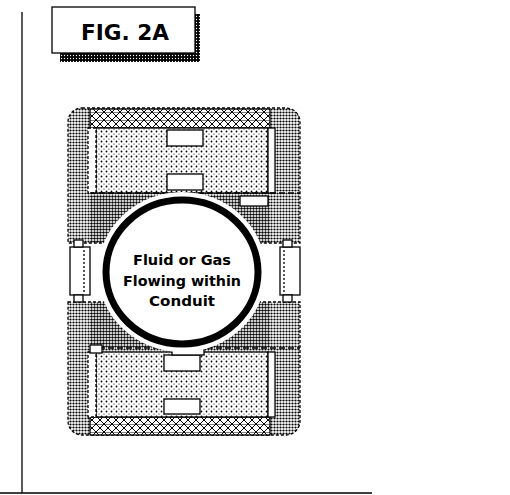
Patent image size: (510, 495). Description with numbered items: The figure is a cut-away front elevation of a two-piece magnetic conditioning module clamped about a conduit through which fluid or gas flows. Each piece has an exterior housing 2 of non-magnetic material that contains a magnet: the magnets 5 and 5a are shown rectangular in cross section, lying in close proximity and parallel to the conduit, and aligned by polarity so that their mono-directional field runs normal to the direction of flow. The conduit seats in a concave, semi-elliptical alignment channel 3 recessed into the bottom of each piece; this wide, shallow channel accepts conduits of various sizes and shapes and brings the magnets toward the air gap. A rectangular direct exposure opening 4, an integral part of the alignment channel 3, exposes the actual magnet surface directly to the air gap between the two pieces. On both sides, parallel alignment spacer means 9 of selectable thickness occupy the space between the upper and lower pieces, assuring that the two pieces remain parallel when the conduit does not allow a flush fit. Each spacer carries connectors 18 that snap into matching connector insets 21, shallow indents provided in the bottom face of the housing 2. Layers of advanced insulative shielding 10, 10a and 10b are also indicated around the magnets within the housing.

The housing 2 is at (300, 163).
The alignment channel 3 is at (258, 218).
The direct exposure opening 4 is at (256, 193).
The magnet 5 is at (275, 393).
The magnet 5a is at (256, 152).
The parallel alignment spacer means 9 is at (300, 265).
The insulative shielding 10 is at (268, 118).
The insulative shielding 10a is at (275, 133).
The insulative shielding 10b is at (90, 148).
The connectors 18 is at (288, 245).
The connector insets 21 is at (290, 303).